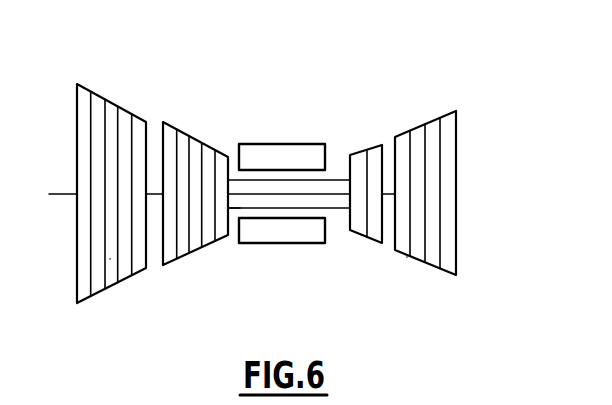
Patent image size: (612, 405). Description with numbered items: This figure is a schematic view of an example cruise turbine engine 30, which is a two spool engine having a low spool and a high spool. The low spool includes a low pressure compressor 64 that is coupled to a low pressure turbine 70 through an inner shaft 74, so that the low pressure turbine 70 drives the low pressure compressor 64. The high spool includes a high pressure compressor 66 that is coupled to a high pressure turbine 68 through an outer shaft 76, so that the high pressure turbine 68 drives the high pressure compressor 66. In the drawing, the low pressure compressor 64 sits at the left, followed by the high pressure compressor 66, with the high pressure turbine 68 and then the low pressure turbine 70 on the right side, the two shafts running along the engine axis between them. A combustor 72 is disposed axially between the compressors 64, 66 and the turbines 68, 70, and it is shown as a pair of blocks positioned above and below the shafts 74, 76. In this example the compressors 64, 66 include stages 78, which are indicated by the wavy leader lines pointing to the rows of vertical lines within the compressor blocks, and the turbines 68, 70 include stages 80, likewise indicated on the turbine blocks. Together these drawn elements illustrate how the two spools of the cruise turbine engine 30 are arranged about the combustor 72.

The cruise turbine engine 30 is at (496, 82).
The low pressure compressor 64 is at (115, 103).
The high pressure compressor 66 is at (200, 141).
The high pressure turbine 68 is at (378, 152).
The low pressure turbine 70 is at (433, 120).
The combustor 72 is at (263, 144).
The inner shaft 74 is at (342, 196).
The outer shaft 76 is at (233, 210).
The stages 78 is at (110, 259).
The stages 80 is at (363, 235).